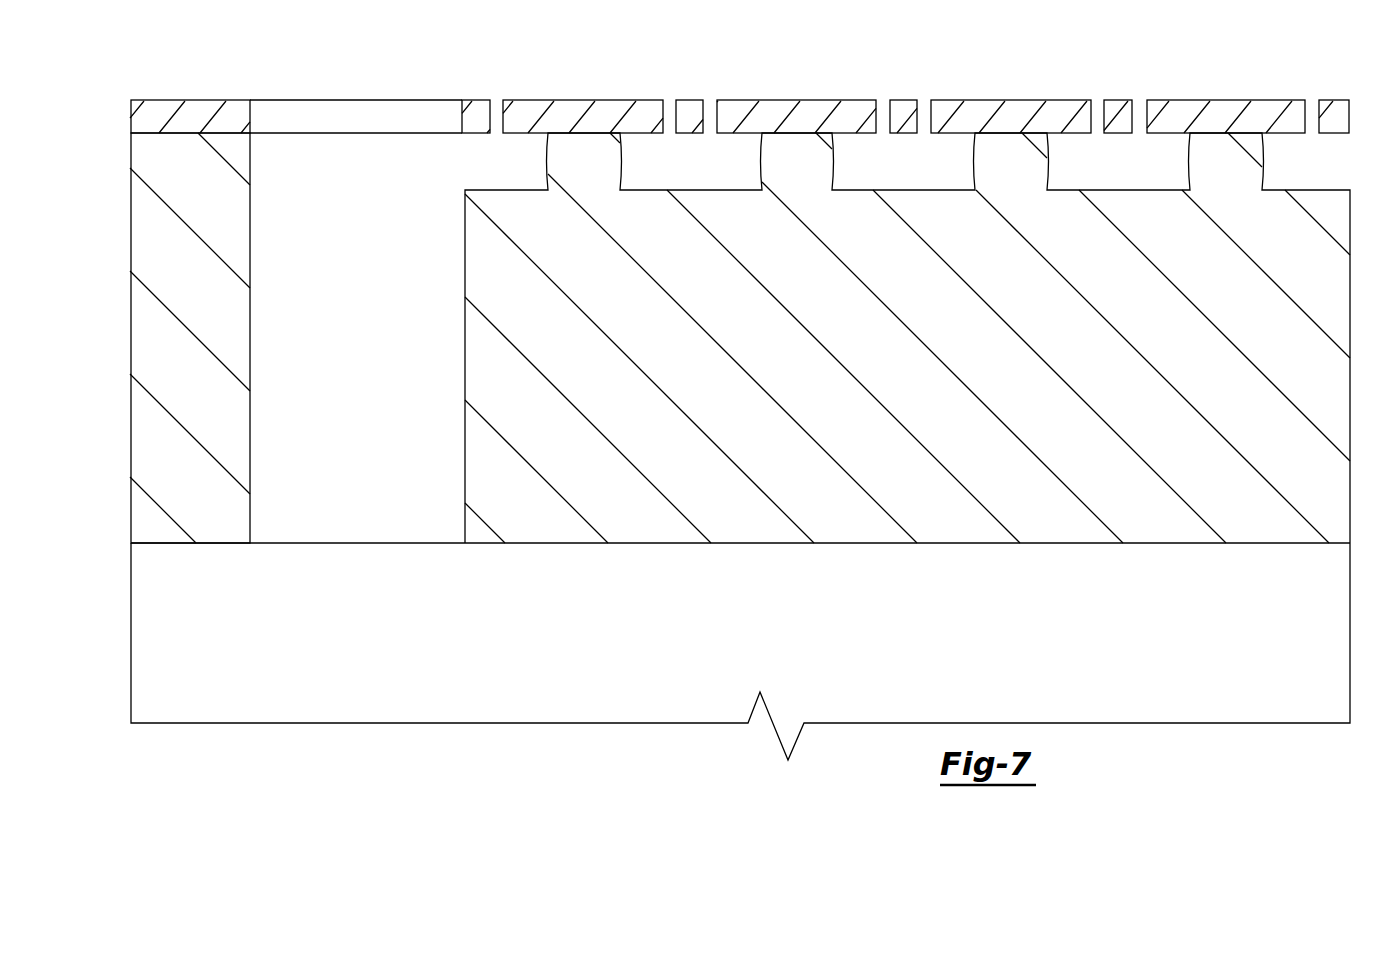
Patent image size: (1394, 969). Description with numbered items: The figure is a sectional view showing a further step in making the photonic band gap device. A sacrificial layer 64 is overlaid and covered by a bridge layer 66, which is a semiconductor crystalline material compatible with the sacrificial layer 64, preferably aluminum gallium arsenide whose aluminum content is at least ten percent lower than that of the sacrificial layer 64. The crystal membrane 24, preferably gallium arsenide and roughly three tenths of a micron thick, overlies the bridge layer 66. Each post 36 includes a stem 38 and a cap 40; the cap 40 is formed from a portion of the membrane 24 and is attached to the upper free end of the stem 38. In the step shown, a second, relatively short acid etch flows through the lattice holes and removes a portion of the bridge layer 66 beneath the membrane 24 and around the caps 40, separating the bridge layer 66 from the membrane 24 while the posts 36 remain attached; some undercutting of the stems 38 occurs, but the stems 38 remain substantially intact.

The lattice membrane 24 is at (208, 99).
The post 36 is at (666, 94).
The stem 38 is at (778, 157).
The cap 40 is at (578, 100).
The sacrificial layer 64 is at (691, 601).
The bridge layer 66 is at (940, 543).